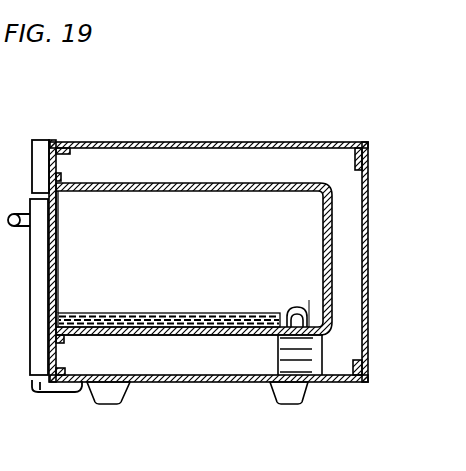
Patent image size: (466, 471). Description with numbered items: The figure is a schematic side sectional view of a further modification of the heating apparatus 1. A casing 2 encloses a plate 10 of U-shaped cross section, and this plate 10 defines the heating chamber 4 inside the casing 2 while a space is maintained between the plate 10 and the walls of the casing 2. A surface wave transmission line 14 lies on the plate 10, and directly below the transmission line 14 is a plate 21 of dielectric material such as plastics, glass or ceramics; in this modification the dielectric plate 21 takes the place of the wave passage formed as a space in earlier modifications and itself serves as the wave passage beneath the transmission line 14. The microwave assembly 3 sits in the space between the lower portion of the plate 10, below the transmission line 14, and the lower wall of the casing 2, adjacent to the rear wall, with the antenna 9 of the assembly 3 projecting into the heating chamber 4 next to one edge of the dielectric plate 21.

The door panel 1 is at (36, 304).
The casing 2 is at (250, 143).
The microwave assembly 3 is at (308, 350).
The heating chamber 4 is at (203, 258).
The antenna 9 is at (309, 312).
The plate 10 is at (172, 336).
The surface wave transmission line 14 is at (175, 314).
The plate of dielectric material 21 is at (283, 313).